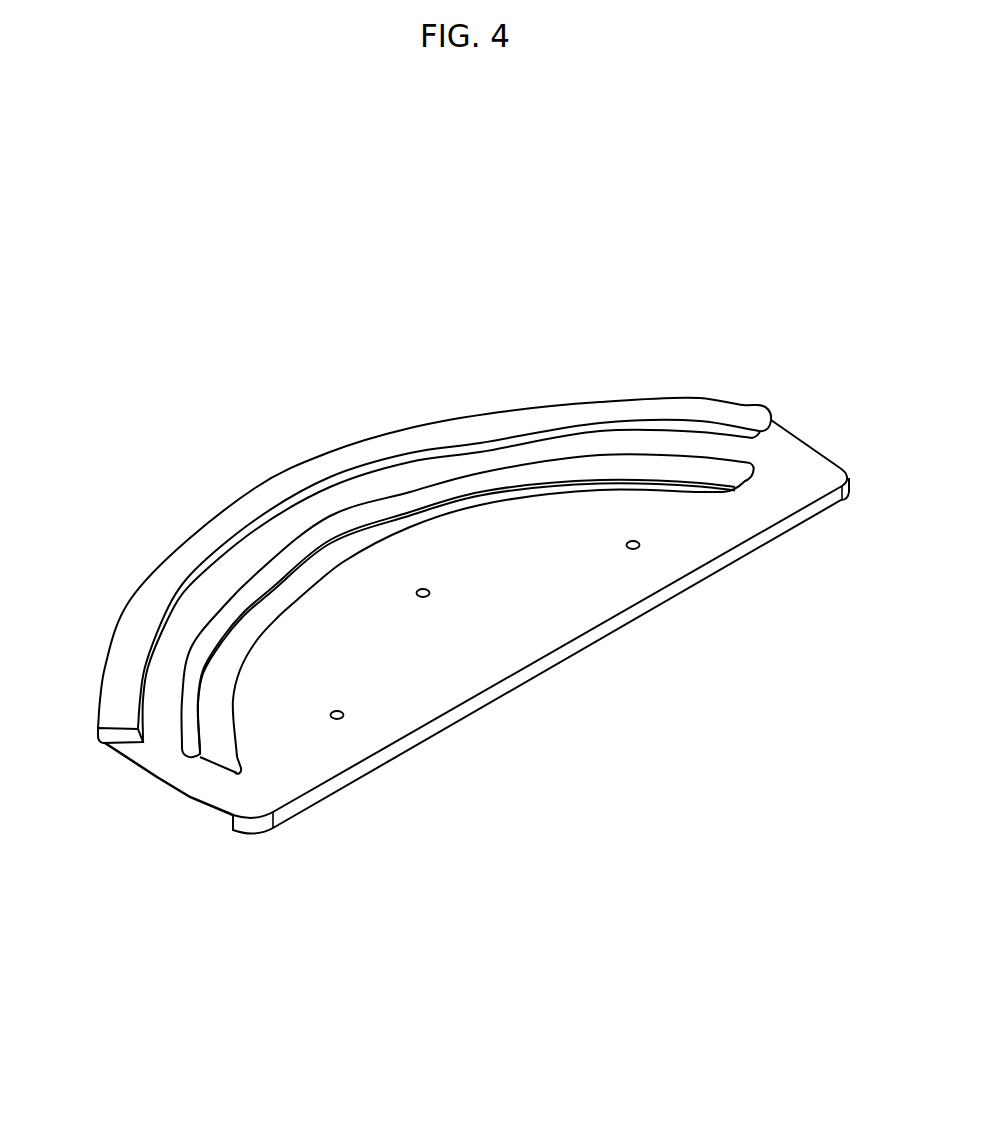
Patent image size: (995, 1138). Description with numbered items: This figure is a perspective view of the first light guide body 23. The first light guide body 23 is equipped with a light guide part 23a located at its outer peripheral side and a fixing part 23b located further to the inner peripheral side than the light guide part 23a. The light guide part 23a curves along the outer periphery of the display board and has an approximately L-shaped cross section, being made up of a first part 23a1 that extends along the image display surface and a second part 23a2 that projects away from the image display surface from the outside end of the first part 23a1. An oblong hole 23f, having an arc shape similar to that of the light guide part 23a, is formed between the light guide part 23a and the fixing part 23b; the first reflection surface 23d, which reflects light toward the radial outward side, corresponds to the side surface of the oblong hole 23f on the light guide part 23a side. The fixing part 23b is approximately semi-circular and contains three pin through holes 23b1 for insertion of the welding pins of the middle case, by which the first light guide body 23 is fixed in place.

The first light guide body 23 is at (449, 619).
The light guide part 23a is at (410, 632).
The first part 23a1 is at (158, 698).
The second part 23a2 is at (113, 700).
The fixing part 23b is at (583, 653).
The pin through holes 23b1 is at (343, 716).
The first reflection surface 23d is at (468, 692).
The oblong hole 23f is at (220, 672).